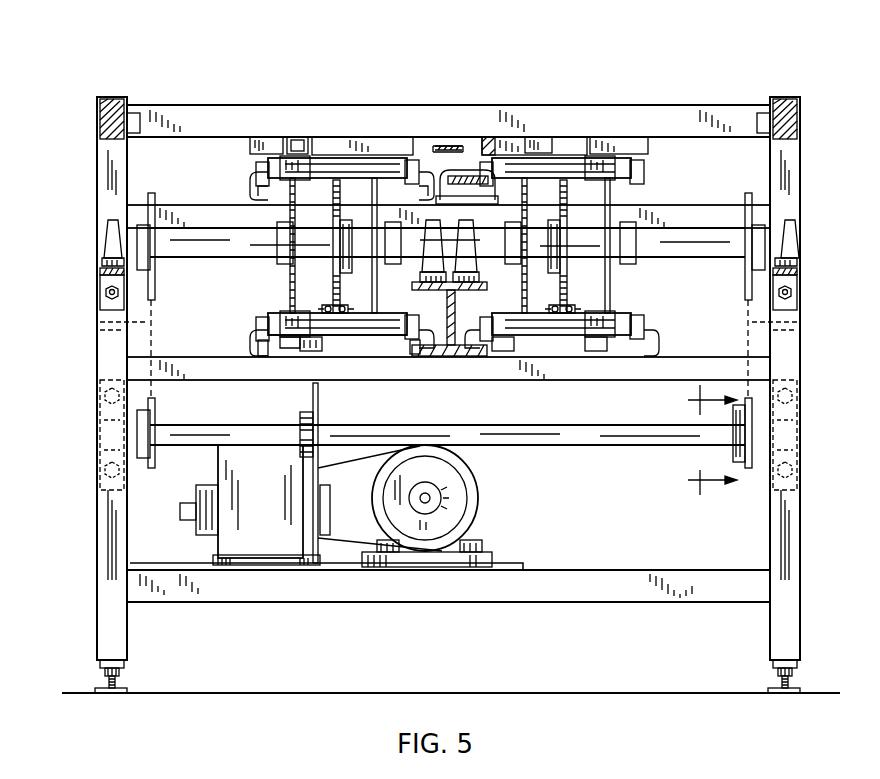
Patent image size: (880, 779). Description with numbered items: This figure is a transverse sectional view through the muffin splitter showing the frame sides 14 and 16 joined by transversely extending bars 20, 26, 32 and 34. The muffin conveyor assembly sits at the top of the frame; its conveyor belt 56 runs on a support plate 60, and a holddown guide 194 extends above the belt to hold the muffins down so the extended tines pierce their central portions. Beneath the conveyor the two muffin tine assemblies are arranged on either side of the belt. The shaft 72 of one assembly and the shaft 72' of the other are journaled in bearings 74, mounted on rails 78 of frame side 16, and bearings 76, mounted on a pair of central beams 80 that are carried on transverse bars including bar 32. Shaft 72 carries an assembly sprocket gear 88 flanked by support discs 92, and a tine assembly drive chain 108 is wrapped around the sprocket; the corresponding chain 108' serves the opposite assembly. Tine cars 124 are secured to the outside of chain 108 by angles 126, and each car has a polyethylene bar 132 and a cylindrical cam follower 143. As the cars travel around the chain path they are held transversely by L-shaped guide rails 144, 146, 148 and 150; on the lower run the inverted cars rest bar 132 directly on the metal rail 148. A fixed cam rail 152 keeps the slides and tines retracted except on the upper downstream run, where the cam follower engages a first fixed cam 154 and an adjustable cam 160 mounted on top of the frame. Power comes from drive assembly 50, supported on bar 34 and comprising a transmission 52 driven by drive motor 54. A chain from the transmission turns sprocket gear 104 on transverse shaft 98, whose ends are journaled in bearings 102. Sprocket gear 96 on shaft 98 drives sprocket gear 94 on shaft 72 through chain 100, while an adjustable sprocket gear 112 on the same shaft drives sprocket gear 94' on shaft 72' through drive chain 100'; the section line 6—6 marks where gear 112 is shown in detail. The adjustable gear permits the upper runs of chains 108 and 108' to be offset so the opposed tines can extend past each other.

The section line 6— 6 is at (699, 440).
The frame side 14 is at (92, 150).
The frame side 16 is at (805, 158).
The transversely extending bar 20 is at (592, 105).
The transversely extending bar 26 is at (672, 215).
The transversely extending bar 32 is at (612, 372).
The transversely extending bar 34 is at (550, 602).
The drive assembly 50 is at (462, 506).
The transmission 52 is at (326, 507).
The drive motor 54 is at (472, 470).
The conveyor belt 56 is at (470, 177).
The support plate 60 is at (486, 174).
The shaft 72 is at (441, 257).
The shaft 72' is at (635, 265).
The bearings 74 is at (105, 228).
The bearings 76 is at (418, 262).
The rails 78 is at (98, 288).
The central beams 80 is at (457, 322).
The assembly sprocket gear 88 is at (368, 338).
The support disc 92 is at (300, 225).
The sprocket gear 94 is at (172, 295).
The sprocket gear 94' is at (805, 295).
The sprocket gear 96 is at (148, 408).
The transverse shaft 98 is at (578, 447).
The chain 100 is at (86, 322).
The drive chain 100' is at (810, 335).
The bearings 102 is at (100, 435).
The sprocket gear 104 is at (300, 435).
The tine assembly drive chain 108 is at (341, 357).
The chain 108' is at (608, 295).
The adjustable sprocket gear 112 is at (737, 465).
The tine cars 124 is at (335, 158).
The angles 126 is at (285, 212).
The bar 132 is at (420, 345).
The cam follower 143 is at (290, 352).
The guide rail 144 is at (262, 174).
The guide rail 146 is at (414, 176).
The guide rail 148 is at (470, 352).
The guide rail 150 is at (262, 333).
The cam rail 152 is at (310, 350).
The first fixed cam 154 is at (377, 143).
The adjustable cam 160 is at (270, 145).
The holddown guide 194 is at (440, 155).